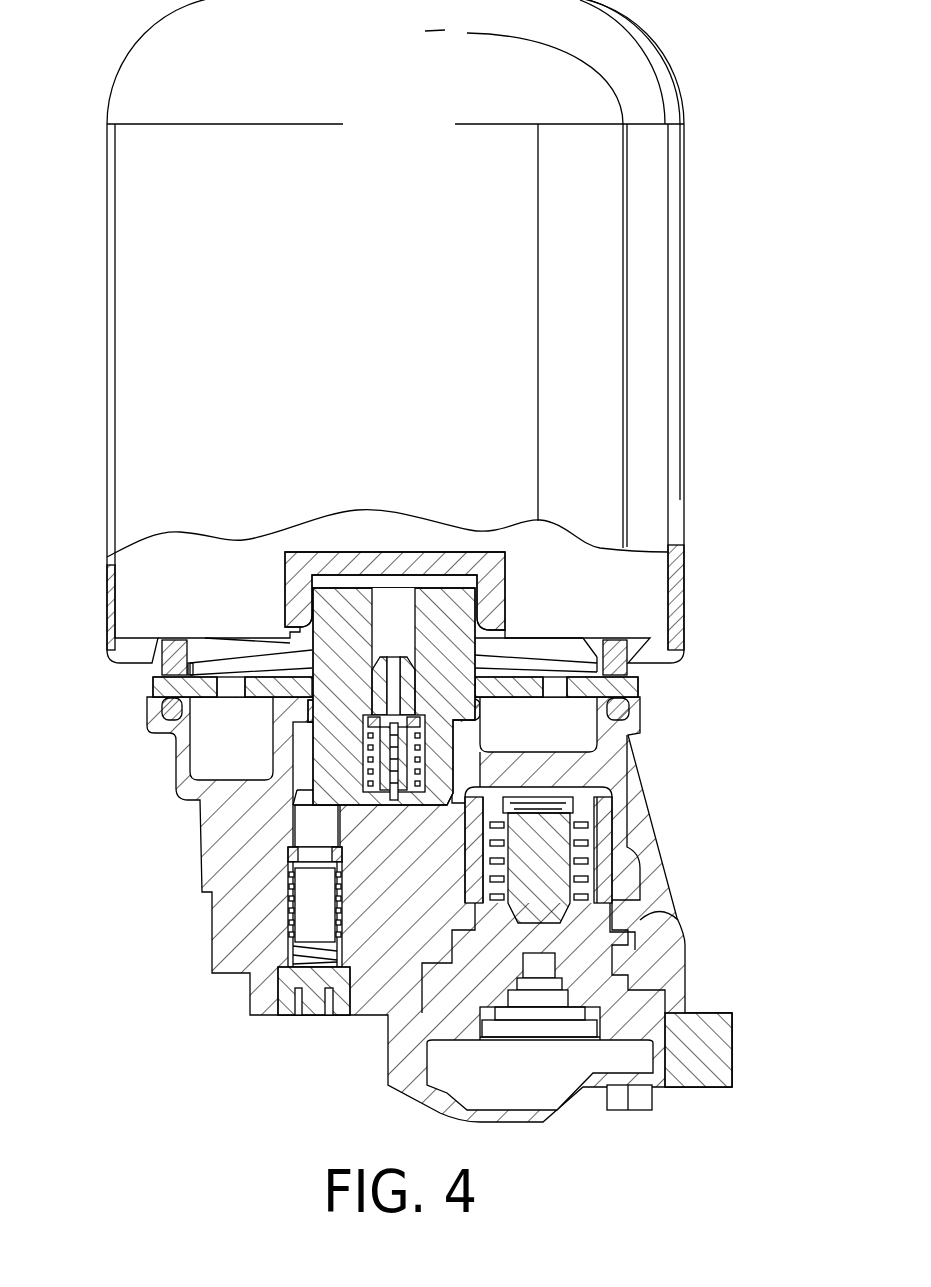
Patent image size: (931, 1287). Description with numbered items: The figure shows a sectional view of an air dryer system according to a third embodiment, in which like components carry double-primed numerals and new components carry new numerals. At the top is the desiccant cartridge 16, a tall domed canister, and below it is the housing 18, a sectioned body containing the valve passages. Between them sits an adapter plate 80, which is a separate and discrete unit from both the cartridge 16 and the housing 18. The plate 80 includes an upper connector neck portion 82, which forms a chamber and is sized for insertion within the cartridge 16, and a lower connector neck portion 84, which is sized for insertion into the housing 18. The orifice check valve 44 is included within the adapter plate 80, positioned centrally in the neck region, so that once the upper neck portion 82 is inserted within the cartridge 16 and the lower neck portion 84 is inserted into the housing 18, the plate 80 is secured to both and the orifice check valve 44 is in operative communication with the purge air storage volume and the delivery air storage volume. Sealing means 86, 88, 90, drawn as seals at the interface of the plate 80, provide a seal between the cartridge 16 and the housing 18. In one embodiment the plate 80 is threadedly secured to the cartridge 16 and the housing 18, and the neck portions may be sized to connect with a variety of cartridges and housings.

The cartridge 16 is at (672, 361).
The housing 18 is at (225, 877).
The orifice check valve 44 is at (383, 660).
The adapter plate 80 is at (640, 690).
The upper connector neck portion 82 is at (443, 608).
The lower connector neck portion 84 is at (435, 753).
The sealing means 86 is at (162, 702).
The sealing means 88 is at (482, 698).
The sealing means 90 is at (174, 640).